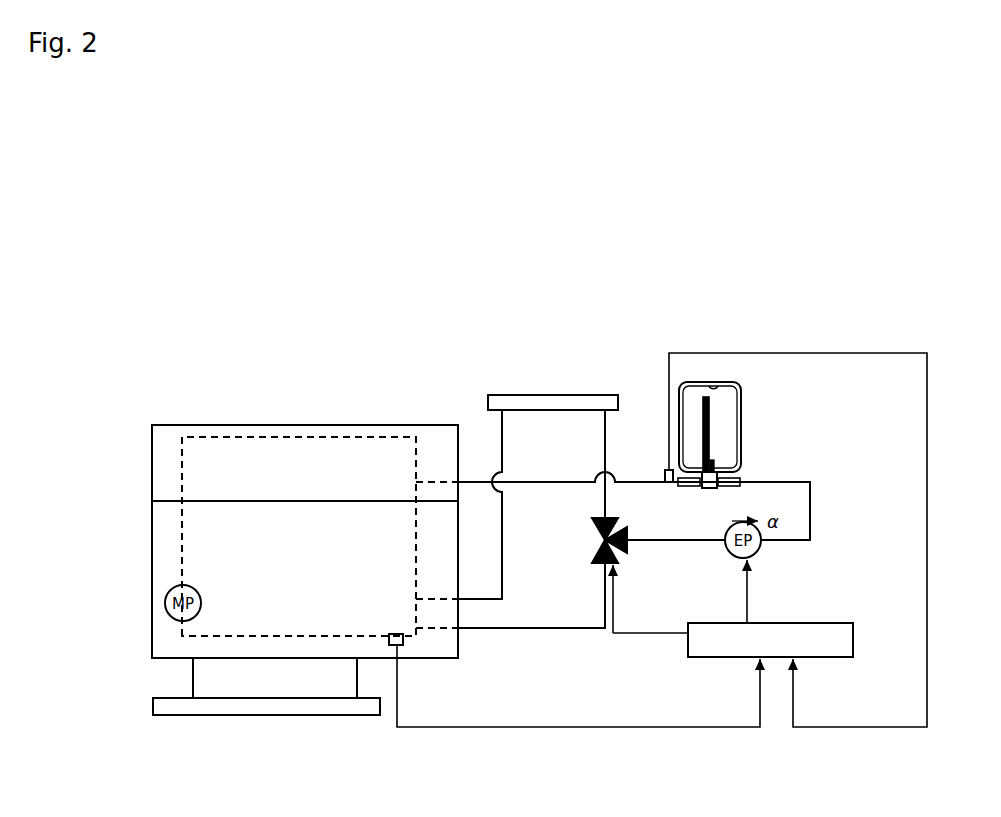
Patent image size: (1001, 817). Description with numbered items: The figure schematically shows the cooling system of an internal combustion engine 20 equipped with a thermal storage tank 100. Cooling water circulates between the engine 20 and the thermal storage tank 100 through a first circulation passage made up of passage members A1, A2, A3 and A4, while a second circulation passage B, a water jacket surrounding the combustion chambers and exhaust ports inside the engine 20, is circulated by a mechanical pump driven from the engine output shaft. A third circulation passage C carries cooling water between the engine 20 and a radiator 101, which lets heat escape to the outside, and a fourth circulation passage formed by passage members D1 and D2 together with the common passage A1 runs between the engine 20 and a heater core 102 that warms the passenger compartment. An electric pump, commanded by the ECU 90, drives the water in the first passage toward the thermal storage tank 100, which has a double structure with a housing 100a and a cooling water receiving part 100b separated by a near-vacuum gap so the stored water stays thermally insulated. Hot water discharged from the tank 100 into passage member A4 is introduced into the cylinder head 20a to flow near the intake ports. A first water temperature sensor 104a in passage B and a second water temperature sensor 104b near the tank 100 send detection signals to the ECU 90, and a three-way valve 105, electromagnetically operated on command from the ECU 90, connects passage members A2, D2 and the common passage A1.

The internal combustion engine 20 is at (292, 413).
The cylinder head 20a is at (152, 450).
The second circulation passage B is at (284, 633).
The third circulation passage C is at (193, 677).
The radiator 101 is at (277, 716).
The first water temperature sensor 104a is at (397, 648).
The heater core 102 is at (525, 394).
The passage member D1 is at (504, 437).
The passage member D2 is at (603, 460).
The passage member A4 is at (534, 486).
The second water temperature sensor 104b is at (663, 467).
The thermal storage tank 100 is at (798, 540).
The housing 100a is at (741, 420).
The cooling water receiving part 100b is at (716, 392).
The passage member A3 is at (812, 500).
The passage member A2 is at (668, 543).
The three-way valve 105 is at (596, 545).
The common passage A1 is at (533, 630).
The ECU 90 is at (853, 636).